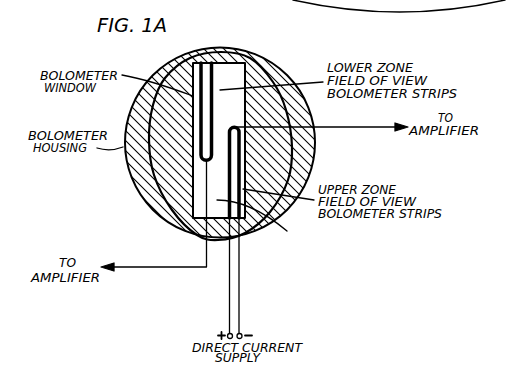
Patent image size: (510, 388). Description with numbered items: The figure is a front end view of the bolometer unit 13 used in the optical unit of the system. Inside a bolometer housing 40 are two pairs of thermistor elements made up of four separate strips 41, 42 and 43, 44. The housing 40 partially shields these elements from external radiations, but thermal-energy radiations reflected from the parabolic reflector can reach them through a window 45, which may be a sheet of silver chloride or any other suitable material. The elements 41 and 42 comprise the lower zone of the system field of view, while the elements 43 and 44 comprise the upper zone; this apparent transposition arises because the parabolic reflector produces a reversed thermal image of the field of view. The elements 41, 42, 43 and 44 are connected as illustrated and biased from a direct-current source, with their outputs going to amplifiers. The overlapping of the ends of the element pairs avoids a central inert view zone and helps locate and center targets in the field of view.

The bolometer unit 13 is at (313, 158).
The bolometer housing 40 is at (295, 121).
The thermistor element strip 41 is at (185, 62).
The thermistor element strip 42 is at (210, 97).
The thermistor element strip 43 is at (217, 200).
The thermistor element strip 44 is at (265, 222).
The window 45 is at (225, 74).